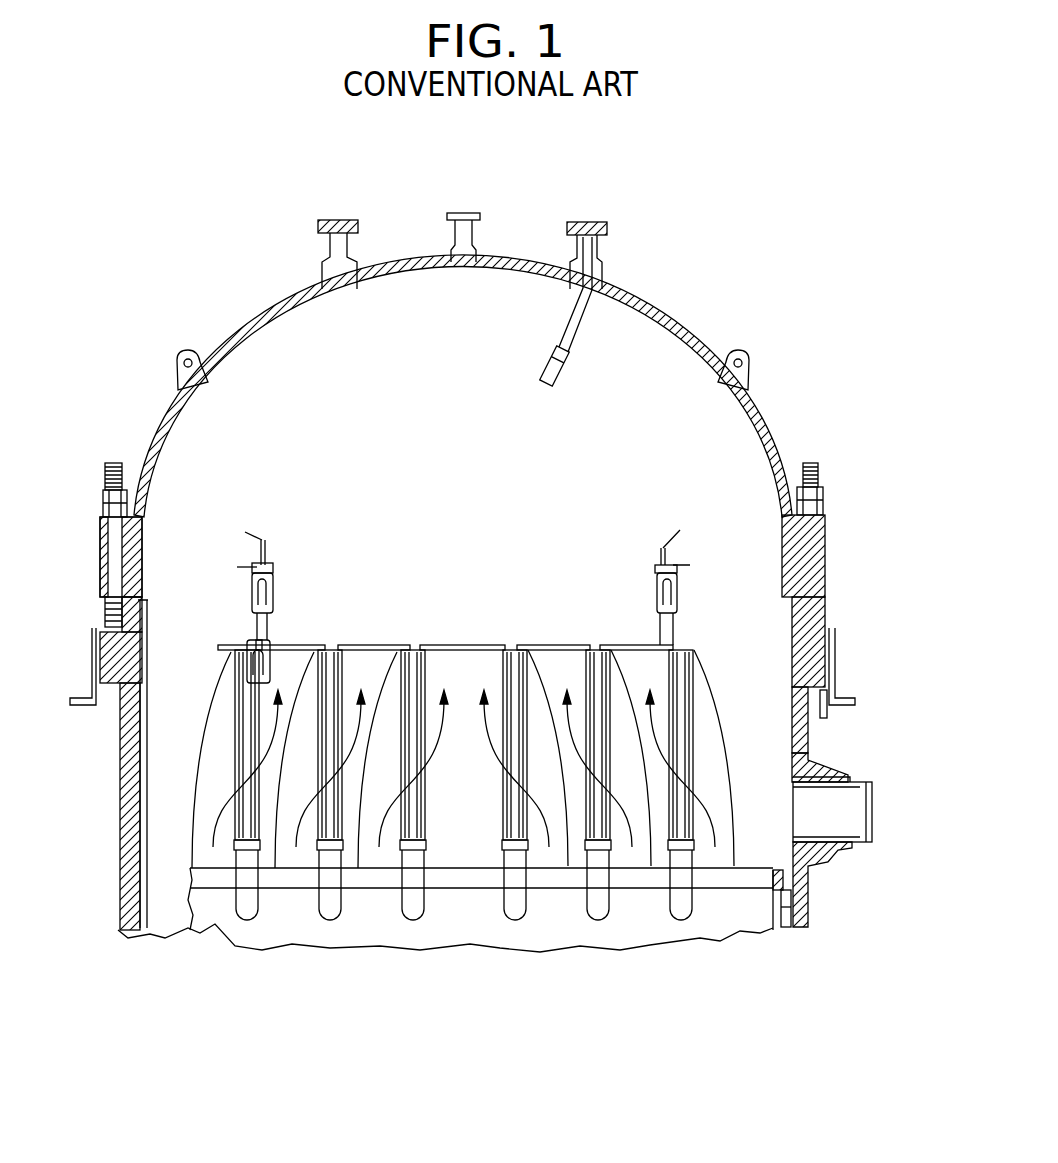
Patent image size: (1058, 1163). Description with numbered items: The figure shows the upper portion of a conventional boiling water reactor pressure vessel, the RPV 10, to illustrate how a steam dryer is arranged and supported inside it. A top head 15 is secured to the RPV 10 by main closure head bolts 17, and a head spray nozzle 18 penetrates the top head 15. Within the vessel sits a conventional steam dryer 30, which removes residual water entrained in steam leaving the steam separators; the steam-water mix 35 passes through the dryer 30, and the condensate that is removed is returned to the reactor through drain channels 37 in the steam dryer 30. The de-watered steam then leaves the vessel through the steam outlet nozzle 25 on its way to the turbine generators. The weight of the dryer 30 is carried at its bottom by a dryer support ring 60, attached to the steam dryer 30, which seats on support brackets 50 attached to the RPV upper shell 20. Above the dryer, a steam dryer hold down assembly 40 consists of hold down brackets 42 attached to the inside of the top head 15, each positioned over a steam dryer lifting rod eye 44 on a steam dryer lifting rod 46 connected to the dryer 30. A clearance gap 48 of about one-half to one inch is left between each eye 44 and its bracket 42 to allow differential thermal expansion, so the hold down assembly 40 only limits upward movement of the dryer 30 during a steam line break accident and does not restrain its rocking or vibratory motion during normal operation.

The RPV 10 is at (337, 998).
The top head 15 is at (655, 318).
The main closure head bolts 17 is at (820, 476).
The head spray nozzle 18 is at (574, 363).
The RPV upper shell 20 is at (792, 630).
The steam outlet nozzle 25 is at (876, 793).
The steam dryer 30 is at (706, 652).
The steam-water mix 35 is at (484, 735).
The drain channels 37 is at (343, 703).
The steam dryer hold down assembly 40 is at (650, 550).
The RPV steam dryer hold down brackets 42 is at (266, 537).
The steam dryer lifting rod eye 44 is at (281, 579).
The steam dryer lifting rod 46 is at (272, 670).
The clearance gap 48 is at (246, 573).
The support brackets 50 is at (786, 912).
The dryer support ring 60 is at (779, 868).